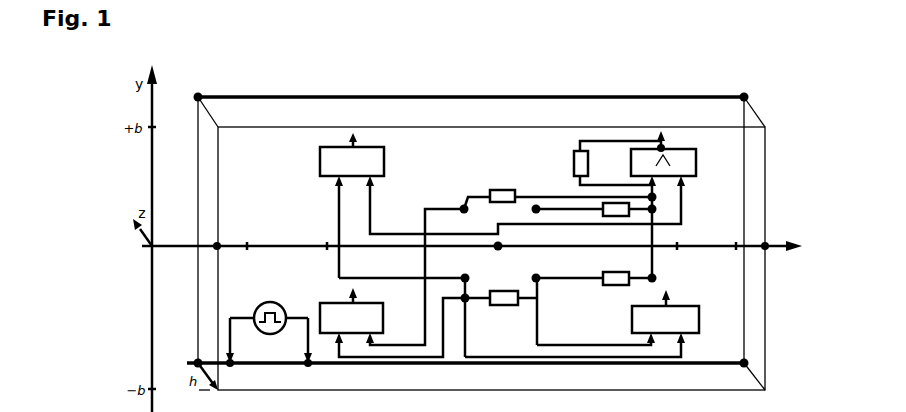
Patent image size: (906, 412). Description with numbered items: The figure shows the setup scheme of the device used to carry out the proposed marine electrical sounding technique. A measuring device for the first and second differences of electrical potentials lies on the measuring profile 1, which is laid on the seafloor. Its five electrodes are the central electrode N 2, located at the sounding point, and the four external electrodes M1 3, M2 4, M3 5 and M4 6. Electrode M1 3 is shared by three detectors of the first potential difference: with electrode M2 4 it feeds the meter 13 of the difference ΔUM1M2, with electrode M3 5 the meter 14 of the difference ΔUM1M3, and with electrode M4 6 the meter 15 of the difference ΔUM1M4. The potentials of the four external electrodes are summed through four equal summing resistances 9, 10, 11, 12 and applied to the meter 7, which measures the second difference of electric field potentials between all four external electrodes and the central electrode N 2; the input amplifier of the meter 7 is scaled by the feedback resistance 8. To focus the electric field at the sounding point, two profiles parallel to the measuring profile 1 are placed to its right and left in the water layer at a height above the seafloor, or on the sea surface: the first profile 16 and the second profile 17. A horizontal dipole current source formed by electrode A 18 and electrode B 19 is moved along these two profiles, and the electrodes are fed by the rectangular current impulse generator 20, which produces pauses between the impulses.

The measuring profile 1 is at (278, 246).
The central electrode N 2 is at (498, 243).
The electrode M1 3 is at (465, 298).
The electrode M2 4 is at (536, 209).
The electrode M3 5 is at (536, 278).
The electrode M4 6 is at (466, 208).
The meter of the second difference of electric field potentials 7 is at (694, 149).
The scaling feedback resistance 8 is at (583, 151).
The summing resistance 9 is at (515, 305).
The summing resistance 10 is at (604, 285).
The summing resistance 11 is at (604, 203).
The summing resistance 12 is at (500, 190).
The meter of the first difference of electric field potentials ΔUM1M2 13 is at (695, 333).
The meter of the first difference of electric field potentials ΔUM1M3 14 is at (368, 150).
The meter of the first difference of electric field potentials ΔUM1M4 15 is at (355, 333).
The first parallel profile 16 is at (440, 363).
The second parallel profile 17 is at (250, 97).
The electrode A 18 is at (308, 363).
The electrode B 19 is at (230, 363).
The rectangular current impulse generator 20 is at (270, 334).